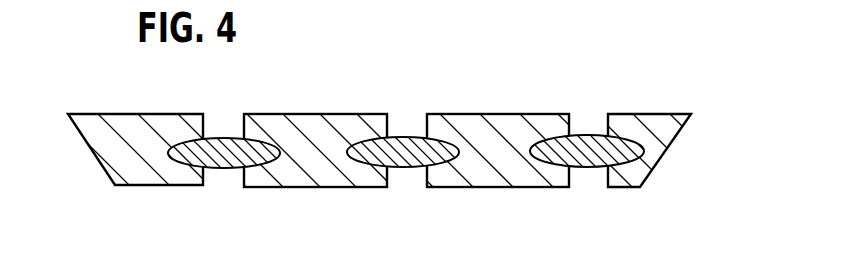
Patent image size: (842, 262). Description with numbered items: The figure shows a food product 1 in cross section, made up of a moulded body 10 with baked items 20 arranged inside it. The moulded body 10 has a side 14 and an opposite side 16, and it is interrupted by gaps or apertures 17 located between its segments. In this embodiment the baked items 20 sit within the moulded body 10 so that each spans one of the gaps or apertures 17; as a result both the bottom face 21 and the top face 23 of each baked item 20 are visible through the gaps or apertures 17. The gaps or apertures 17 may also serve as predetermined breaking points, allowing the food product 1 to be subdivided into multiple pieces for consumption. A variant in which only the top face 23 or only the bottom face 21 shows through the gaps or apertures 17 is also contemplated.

The food product 1 is at (399, 148).
The moulded body 10 is at (99, 146).
The side 14 is at (320, 147).
The side 16 is at (295, 188).
The gaps or apertures 17 is at (588, 180).
The baked items 20 is at (223, 138).
The bottom face 21 is at (405, 168).
The top face 23 is at (397, 156).